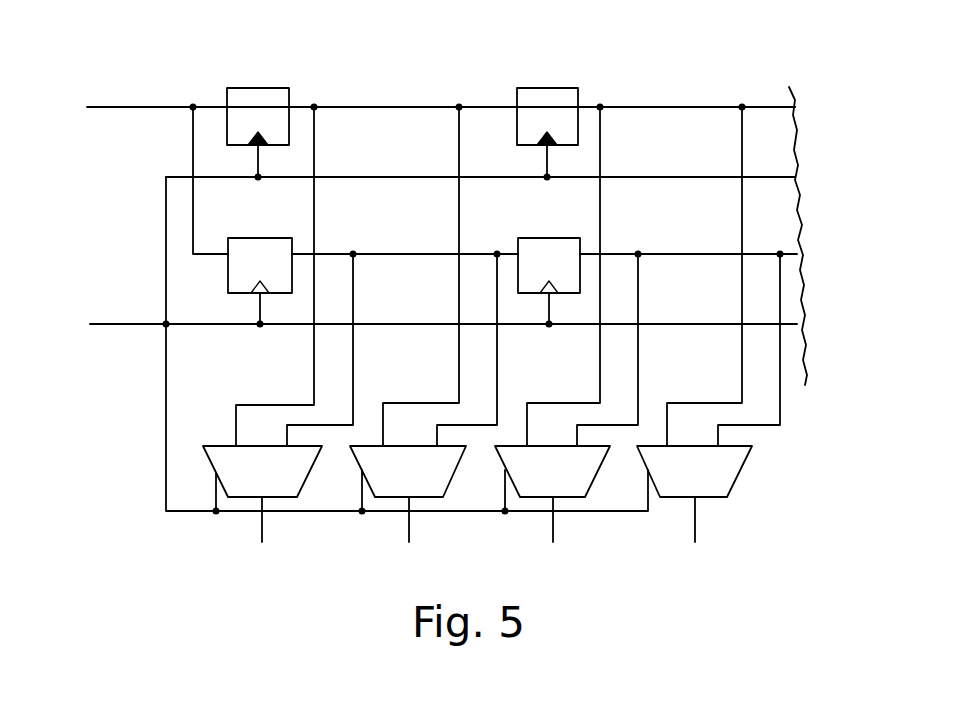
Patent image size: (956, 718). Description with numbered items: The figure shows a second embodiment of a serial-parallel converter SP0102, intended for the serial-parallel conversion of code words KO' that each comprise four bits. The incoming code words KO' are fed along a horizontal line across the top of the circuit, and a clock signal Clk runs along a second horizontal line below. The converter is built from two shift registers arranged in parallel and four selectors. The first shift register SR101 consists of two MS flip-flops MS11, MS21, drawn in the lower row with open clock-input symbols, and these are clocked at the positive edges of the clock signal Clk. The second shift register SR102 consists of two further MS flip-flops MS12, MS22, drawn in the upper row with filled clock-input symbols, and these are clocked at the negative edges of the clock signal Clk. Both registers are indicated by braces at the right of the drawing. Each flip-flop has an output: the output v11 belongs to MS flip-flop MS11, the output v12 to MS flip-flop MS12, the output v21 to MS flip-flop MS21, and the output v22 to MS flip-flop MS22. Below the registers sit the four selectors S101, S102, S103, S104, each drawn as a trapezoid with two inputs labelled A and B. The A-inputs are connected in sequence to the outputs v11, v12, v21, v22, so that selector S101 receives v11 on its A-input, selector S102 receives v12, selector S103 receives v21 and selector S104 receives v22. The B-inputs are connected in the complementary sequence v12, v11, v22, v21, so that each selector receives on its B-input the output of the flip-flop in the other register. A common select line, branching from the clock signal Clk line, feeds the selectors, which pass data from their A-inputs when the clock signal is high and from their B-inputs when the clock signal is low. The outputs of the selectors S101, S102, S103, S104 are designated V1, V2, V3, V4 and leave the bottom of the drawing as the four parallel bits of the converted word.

The serial-parallel converter SP0102 is at (215, 73).
The code words KO is at (441, 93).
The clock signal Clk is at (442, 311).
The MS flip-flop MS12 is at (258, 116).
The MS flip-flop MS22 is at (547, 116).
The MS flip-flop MS11 is at (260, 265).
The MS flip-flop MS21 is at (549, 265).
The output of MS flip-flop MS12 v12 is at (294, 105).
The output of MS flip-flop MS22 v22 is at (586, 105).
The output of MS flip-flop MS11 v11 is at (302, 257).
The output of MS flip-flop MS21 v21 is at (594, 257).
The second shift register SR102 is at (812, 65).
The first shift register SR101 is at (814, 215).
The selector S101 is at (262, 456).
The selector S102 is at (408, 456).
The selector S103 is at (552, 456).
The selector S104 is at (694, 456).
The selector output V1 is at (281, 520).
The selector output V2 is at (428, 520).
The selector output V3 is at (573, 520).
The selector output V4 is at (714, 520).